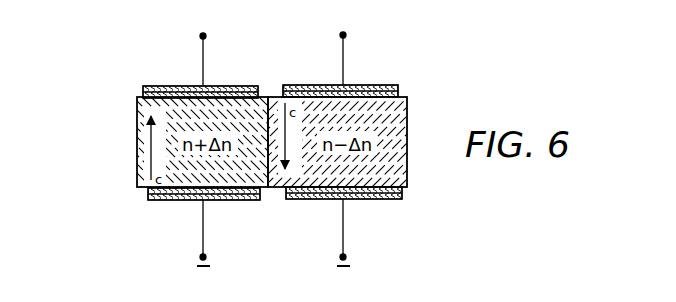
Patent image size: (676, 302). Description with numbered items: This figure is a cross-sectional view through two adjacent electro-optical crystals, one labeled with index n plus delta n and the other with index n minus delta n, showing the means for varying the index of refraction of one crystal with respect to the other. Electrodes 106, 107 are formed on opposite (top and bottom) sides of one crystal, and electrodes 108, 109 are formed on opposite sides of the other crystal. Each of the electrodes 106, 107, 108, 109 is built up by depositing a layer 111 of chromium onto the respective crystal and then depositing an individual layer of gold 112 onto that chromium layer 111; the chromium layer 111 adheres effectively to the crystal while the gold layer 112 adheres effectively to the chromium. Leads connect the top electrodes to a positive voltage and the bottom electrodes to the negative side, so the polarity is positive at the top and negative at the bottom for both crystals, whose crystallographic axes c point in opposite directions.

The electrode 106 is at (402, 83).
The electrode 107 is at (402, 204).
The electrode 108 is at (126, 95).
The electrode 109 is at (133, 193).
The chromium layer 111 is at (255, 93).
The gold layer 112 is at (215, 86).